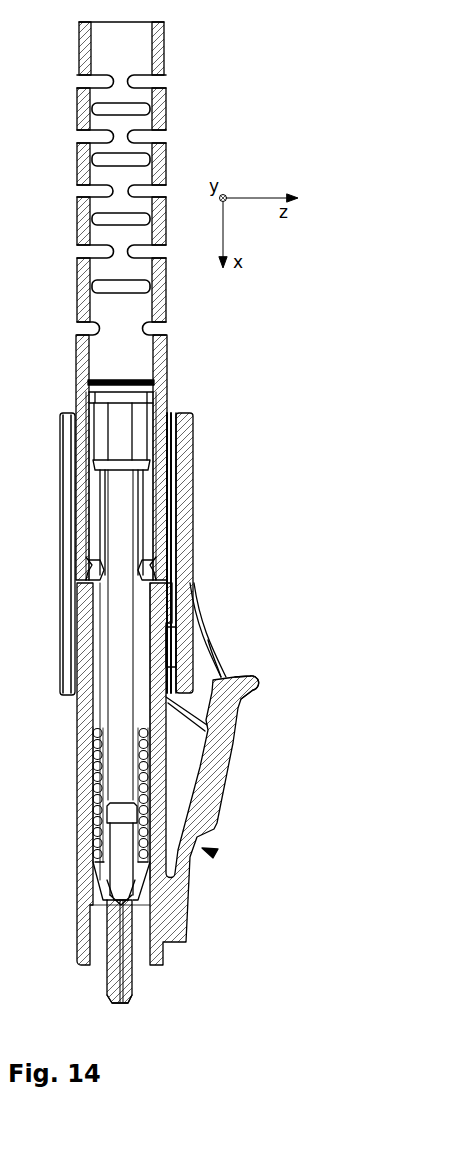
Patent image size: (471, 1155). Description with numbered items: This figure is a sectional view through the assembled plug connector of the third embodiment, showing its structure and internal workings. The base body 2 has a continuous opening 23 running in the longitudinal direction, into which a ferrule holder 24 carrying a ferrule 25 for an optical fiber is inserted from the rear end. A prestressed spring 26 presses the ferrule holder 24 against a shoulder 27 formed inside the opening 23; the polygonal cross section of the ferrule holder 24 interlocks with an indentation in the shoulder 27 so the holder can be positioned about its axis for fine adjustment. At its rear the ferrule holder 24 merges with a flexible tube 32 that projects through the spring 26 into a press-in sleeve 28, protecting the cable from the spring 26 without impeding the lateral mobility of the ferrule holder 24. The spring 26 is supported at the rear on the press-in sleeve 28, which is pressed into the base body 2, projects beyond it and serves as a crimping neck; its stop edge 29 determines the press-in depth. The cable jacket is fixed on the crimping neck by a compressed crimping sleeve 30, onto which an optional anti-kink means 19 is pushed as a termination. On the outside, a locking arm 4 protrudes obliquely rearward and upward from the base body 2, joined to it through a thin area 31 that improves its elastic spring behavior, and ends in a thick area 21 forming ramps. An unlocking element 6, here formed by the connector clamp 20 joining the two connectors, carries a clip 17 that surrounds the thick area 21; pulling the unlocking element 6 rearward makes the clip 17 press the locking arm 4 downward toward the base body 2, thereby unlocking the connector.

The anti-kink means 19 is at (165, 356).
The crimping sleeve 30 is at (191, 412).
The press-in sleeve 28 is at (192, 457).
The unlocking element 6 is at (193, 500).
The stop edge 29 is at (163, 570).
The base body 2 is at (157, 603).
The connector clamp 20 is at (208, 617).
The clip 17 is at (205, 665).
The thick area 21 is at (256, 683).
The locking arm 4 is at (227, 740).
The flexible tube 32 is at (152, 773).
The spring 26 is at (150, 795).
The thin area 31 is at (217, 853).
The ferrule holder 24 is at (150, 863).
The shoulder 27 is at (143, 895).
The continuous opening 23 is at (142, 946).
The ferrule 25 is at (140, 970).